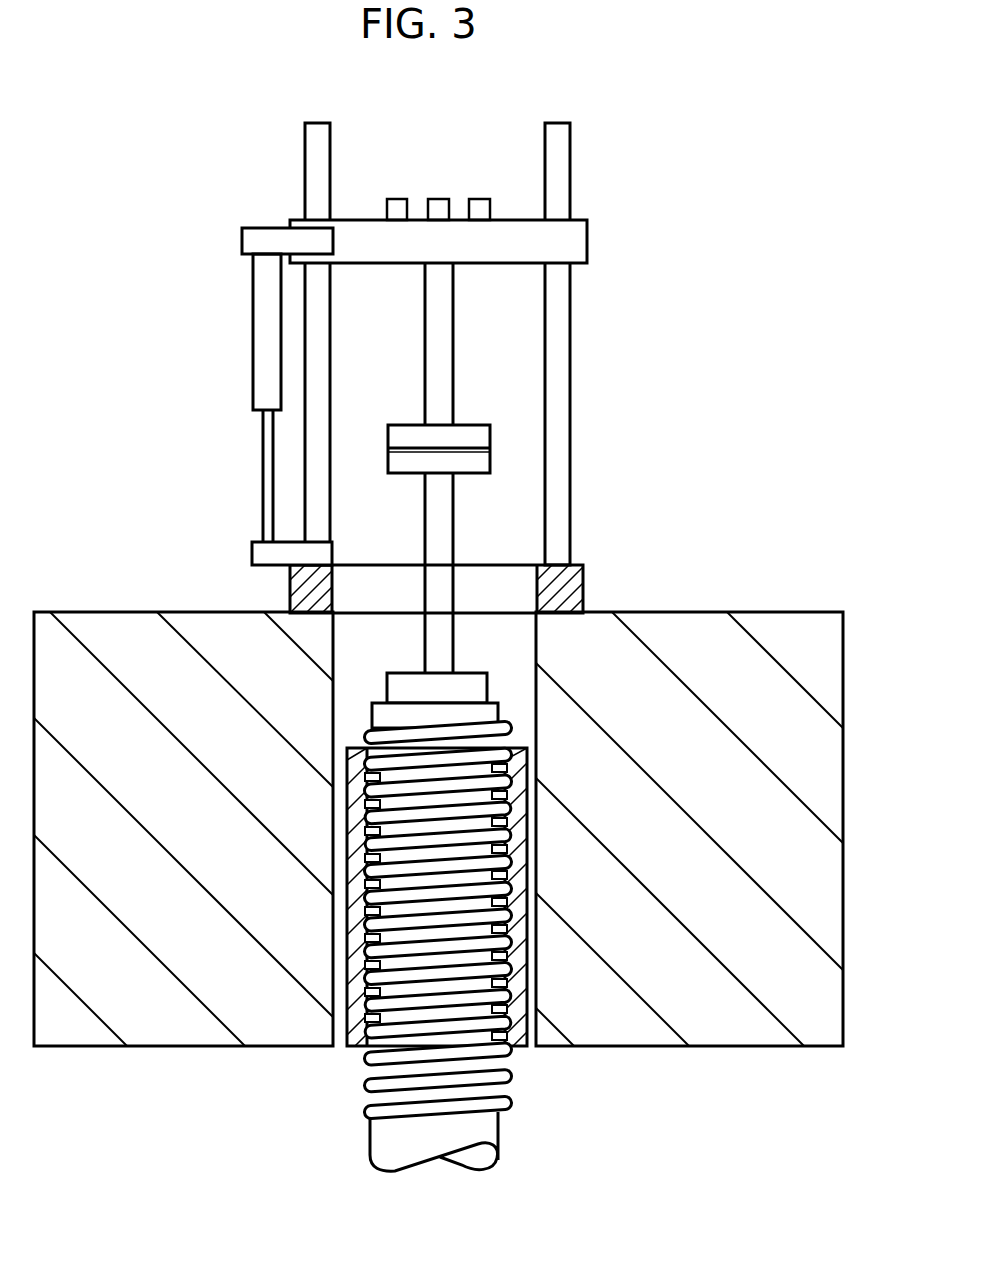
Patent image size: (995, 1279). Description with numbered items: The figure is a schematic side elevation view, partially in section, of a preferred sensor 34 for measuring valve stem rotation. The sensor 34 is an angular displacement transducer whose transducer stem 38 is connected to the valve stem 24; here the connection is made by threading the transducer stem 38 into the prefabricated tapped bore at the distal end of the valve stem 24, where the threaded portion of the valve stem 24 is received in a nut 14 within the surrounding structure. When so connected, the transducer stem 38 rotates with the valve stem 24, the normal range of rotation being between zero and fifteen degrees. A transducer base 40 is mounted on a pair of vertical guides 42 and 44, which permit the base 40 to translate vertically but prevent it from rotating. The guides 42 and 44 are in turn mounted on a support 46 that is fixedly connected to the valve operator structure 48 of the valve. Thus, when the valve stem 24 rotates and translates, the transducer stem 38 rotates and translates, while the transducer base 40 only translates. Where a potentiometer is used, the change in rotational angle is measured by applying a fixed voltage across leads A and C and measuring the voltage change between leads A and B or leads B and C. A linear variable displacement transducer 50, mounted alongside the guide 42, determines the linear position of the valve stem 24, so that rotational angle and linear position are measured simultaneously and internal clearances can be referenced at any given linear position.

The nut 14 is at (527, 978).
The valve stem 24 is at (362, 1112).
The sensor 34 is at (662, 327).
The transducer stem 38 is at (453, 503).
The transducer base 40 is at (587, 242).
The vertical guide 42 is at (305, 168).
The vertical guide 44 is at (570, 150).
The support 46 is at (583, 584).
The valve operator structure 48 is at (843, 857).
The linear variable displacement transducer 50 is at (253, 351).